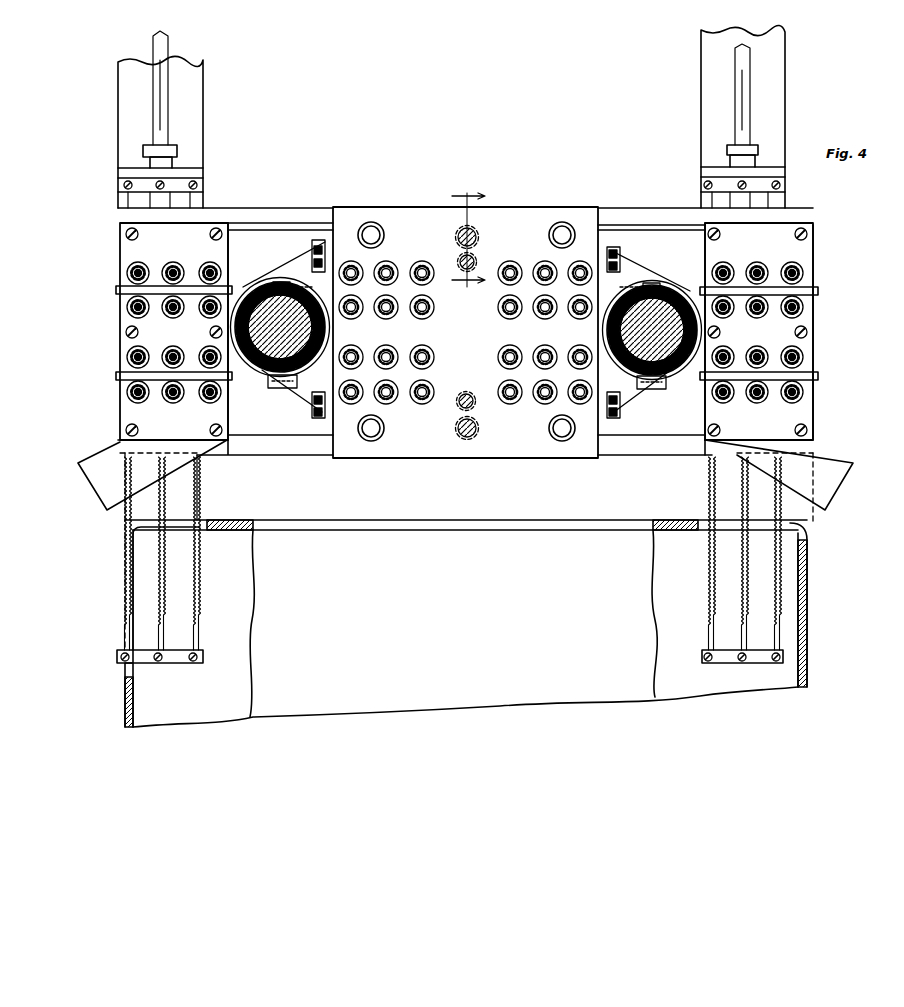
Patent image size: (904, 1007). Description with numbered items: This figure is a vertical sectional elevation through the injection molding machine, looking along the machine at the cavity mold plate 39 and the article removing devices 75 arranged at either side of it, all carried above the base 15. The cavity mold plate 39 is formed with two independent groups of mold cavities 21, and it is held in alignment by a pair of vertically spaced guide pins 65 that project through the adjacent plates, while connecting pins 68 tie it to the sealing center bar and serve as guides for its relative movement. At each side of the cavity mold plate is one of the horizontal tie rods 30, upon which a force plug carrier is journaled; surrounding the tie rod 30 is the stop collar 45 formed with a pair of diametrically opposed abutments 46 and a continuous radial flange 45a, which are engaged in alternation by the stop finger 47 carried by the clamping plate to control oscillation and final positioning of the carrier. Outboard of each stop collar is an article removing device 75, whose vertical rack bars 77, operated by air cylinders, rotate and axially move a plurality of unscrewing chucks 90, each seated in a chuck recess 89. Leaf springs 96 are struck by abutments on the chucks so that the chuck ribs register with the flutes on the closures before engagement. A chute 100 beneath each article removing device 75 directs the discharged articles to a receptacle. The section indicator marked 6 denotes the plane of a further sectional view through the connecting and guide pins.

The section line 6- 6 is at (459, 239).
The base 15 is at (443, 650).
The mold cavities 21 is at (544, 267).
The tie rods 30 is at (278, 318).
The cavity mold plate 39 is at (552, 215).
The stop collar 45 is at (322, 335).
The radial flange 45a is at (305, 373).
The abutments 46 is at (283, 380).
The stop finger 47 is at (281, 283).
The guide pins 65 is at (458, 231).
The connecting pins 68 is at (461, 260).
The article removing device 75 is at (108, 266).
The rack bars 77 is at (195, 630).
The chuck recess 89 is at (207, 312).
The chuck 90 is at (209, 266).
The leaf springs 96 is at (152, 281).
The chute 100 is at (101, 484).